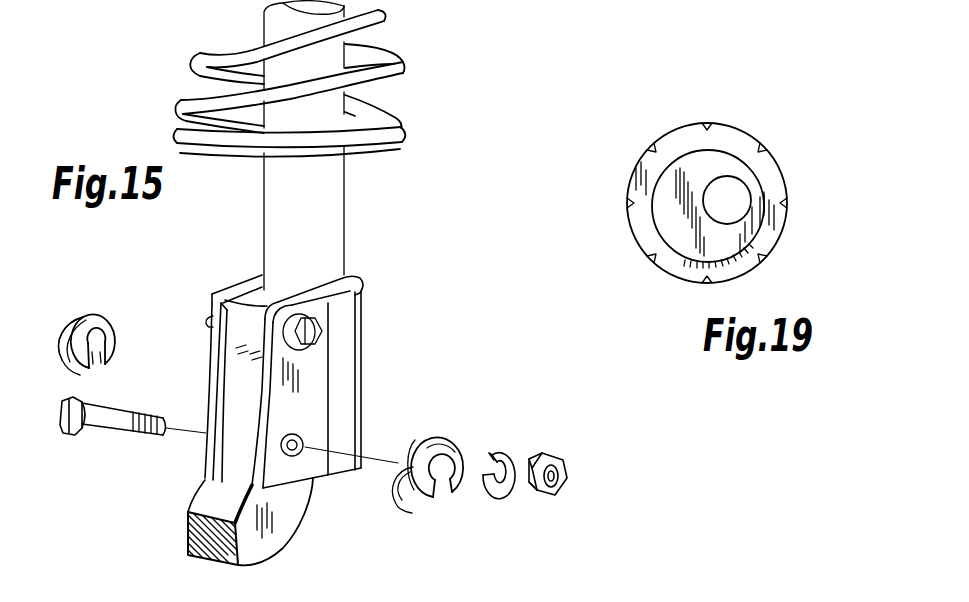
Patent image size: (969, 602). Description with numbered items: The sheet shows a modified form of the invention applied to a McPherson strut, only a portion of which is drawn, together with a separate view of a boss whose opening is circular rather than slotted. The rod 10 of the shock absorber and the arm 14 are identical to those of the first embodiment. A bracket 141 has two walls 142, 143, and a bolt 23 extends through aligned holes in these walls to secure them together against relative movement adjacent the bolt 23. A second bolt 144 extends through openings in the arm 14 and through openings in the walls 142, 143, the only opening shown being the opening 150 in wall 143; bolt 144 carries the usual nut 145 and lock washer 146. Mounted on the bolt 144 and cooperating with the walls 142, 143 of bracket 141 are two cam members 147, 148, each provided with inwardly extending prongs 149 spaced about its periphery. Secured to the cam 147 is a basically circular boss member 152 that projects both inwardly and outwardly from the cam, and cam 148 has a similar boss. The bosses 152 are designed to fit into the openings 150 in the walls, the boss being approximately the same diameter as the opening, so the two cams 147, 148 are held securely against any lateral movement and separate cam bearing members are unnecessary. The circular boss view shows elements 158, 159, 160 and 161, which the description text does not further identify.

In FIG. 15, the rod 10 is at (333, 192).
In FIG. 15, the arm 14 is at (280, 524).
In FIG. 15, the bolt 23 is at (205, 318).
In FIG. 15, the bracket 141 is at (364, 339).
In FIG. 15, the wall 142 is at (204, 400).
In FIG. 15, the wall 143 is at (318, 390).
In FIG. 15, the bolt 144 is at (97, 423).
In FIG. 15, the nut 145 is at (546, 457).
In FIG. 15, the lock washer 146 is at (491, 455).
In FIG. 15, the cam member 147 is at (85, 317).
In FIG. 15, the cam member 148 is at (430, 438).
In FIG. 15, the prongs 149 is at (66, 333).
In FIG. 15, the opening 150 is at (300, 437).
In FIG. 15, the boss member 152 is at (106, 341).
In FIG. 19, the outer ring 158 is at (743, 135).
In FIG. 19, the notches 159 is at (770, 150).
In FIG. 19, the inner ring 160 is at (745, 230).
In FIG. 19, the central hole 161 is at (703, 193).